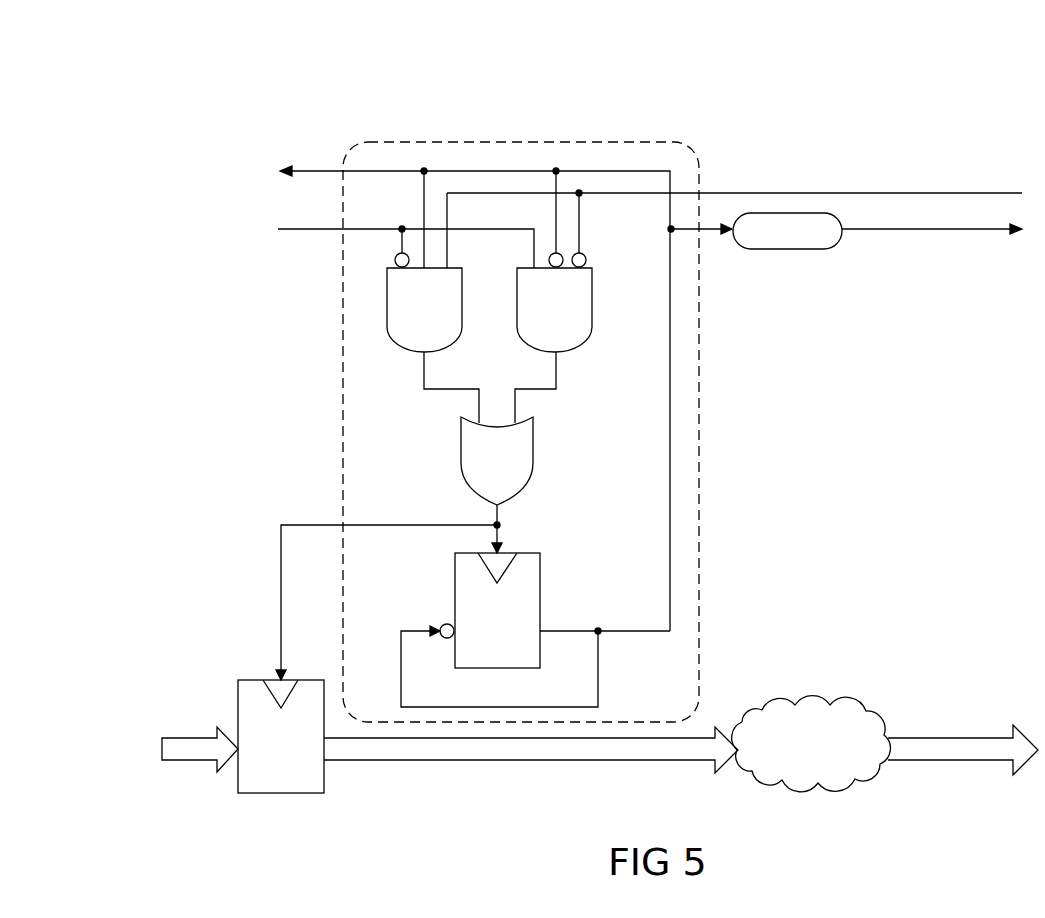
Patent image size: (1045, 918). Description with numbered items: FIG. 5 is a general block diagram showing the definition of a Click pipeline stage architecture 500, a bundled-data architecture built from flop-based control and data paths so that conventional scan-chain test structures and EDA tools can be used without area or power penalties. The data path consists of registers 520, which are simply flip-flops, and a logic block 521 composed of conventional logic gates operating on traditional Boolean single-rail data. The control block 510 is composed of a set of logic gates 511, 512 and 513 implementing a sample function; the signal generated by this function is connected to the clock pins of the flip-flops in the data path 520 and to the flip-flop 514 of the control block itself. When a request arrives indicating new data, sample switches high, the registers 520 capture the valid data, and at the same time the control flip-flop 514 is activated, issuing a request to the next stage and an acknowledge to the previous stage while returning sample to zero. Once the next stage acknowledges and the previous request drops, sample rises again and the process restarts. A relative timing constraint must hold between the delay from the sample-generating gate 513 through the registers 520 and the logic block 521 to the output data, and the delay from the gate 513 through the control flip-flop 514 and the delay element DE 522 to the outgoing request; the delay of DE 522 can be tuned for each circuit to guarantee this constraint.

The architecture 500 is at (108, 85).
The control block 510 is at (351, 158).
The logic gate 511 is at (433, 338).
The logic gate 512 is at (553, 338).
The logic gate 513 is at (529, 485).
The control block flip-flop 514 is at (535, 630).
The registers 520 is at (238, 680).
The logic block 521 is at (833, 703).
The DE 522 is at (827, 247).